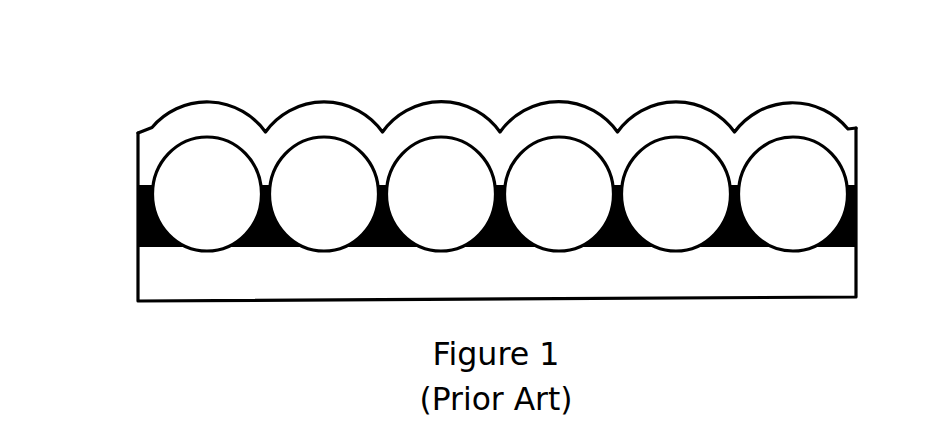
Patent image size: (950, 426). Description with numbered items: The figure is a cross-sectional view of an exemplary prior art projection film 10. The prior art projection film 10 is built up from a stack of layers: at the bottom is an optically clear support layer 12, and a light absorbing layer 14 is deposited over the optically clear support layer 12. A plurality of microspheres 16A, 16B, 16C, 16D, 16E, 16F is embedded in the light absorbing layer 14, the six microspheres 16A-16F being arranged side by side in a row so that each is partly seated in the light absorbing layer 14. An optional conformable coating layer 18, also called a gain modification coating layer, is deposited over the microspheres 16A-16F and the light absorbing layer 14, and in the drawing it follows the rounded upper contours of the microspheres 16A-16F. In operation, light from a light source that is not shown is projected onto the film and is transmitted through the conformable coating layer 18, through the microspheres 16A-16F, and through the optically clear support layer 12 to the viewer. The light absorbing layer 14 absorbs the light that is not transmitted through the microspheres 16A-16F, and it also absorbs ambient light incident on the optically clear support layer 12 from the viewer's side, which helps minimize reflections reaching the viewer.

The prior art projection film 10 is at (563, 81).
The optically clear support layer 12 is at (210, 277).
The light absorbing layer 14 is at (138, 222).
The microsphere 16A is at (207, 194).
The microsphere 16B is at (324, 194).
The microsphere 16C is at (441, 194).
The microsphere 16D is at (559, 194).
The microsphere 16E is at (676, 194).
The microsphere 16F is at (793, 194).
The conformable coating layer 18 is at (168, 118).